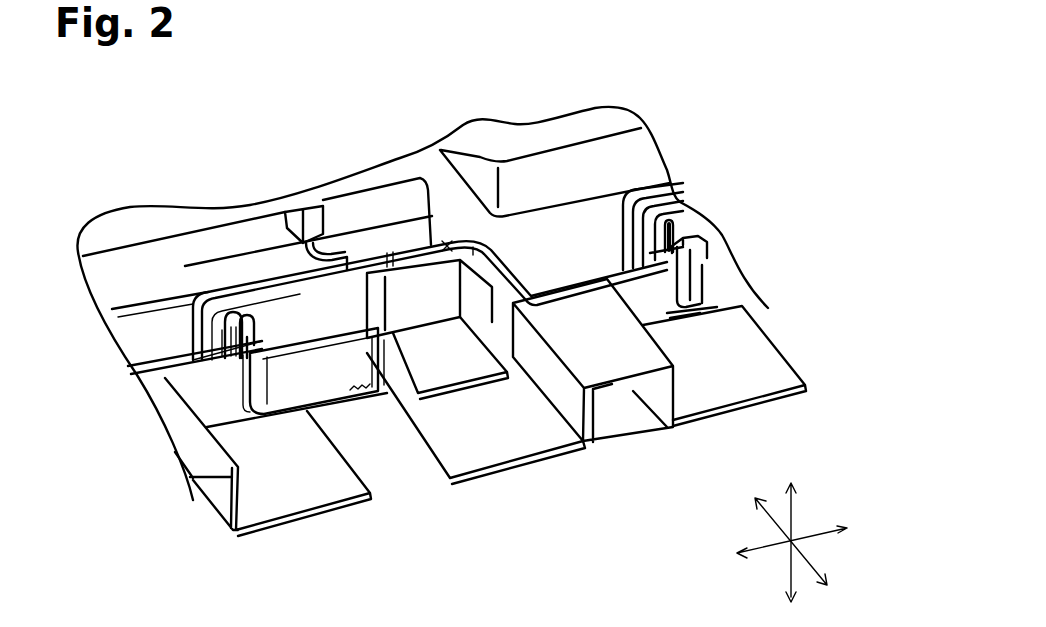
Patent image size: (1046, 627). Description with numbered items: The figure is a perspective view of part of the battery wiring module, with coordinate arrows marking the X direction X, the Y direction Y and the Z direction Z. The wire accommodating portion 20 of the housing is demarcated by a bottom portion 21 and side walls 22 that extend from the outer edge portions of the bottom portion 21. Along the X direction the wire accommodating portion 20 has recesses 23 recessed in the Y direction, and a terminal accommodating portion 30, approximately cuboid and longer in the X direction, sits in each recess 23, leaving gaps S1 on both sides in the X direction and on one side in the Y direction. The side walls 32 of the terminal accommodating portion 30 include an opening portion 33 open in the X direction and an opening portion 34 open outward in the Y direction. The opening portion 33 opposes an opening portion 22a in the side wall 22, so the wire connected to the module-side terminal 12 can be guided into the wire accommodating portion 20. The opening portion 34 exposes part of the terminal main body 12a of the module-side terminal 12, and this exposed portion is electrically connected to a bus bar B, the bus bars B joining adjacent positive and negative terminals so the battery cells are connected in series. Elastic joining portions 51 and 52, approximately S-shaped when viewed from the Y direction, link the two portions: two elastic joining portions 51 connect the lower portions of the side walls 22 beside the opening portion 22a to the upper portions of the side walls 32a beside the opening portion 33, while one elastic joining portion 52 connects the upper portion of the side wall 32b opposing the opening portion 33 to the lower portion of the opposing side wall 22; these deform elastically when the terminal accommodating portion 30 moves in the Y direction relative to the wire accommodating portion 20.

The wire accommodating portion 20 is at (500, 247).
The bottom portion 21 is at (557, 215).
The side wall 22 is at (600, 270).
The opening portion 22a is at (210, 350).
The recess 23 is at (400, 250).
The terminal accommodating portion 30 is at (252, 303).
The side wall 32 is at (352, 258).
The side wall 32a is at (257, 350).
The side wall 32b is at (470, 290).
The opening portion 33 is at (243, 318).
The opening portion 34 is at (472, 337).
The elastic joining portion 51 is at (213, 337).
The elastic joining portion 52 is at (515, 312).
The terminal main body 12a is at (453, 378).
The module-side terminal 12 is at (396, 438).
The gap S1 is at (447, 246).
The bus bar B is at (277, 505).
The X direction X is at (772, 550).
The Y direction Y is at (805, 558).
The Z direction Z is at (792, 518).